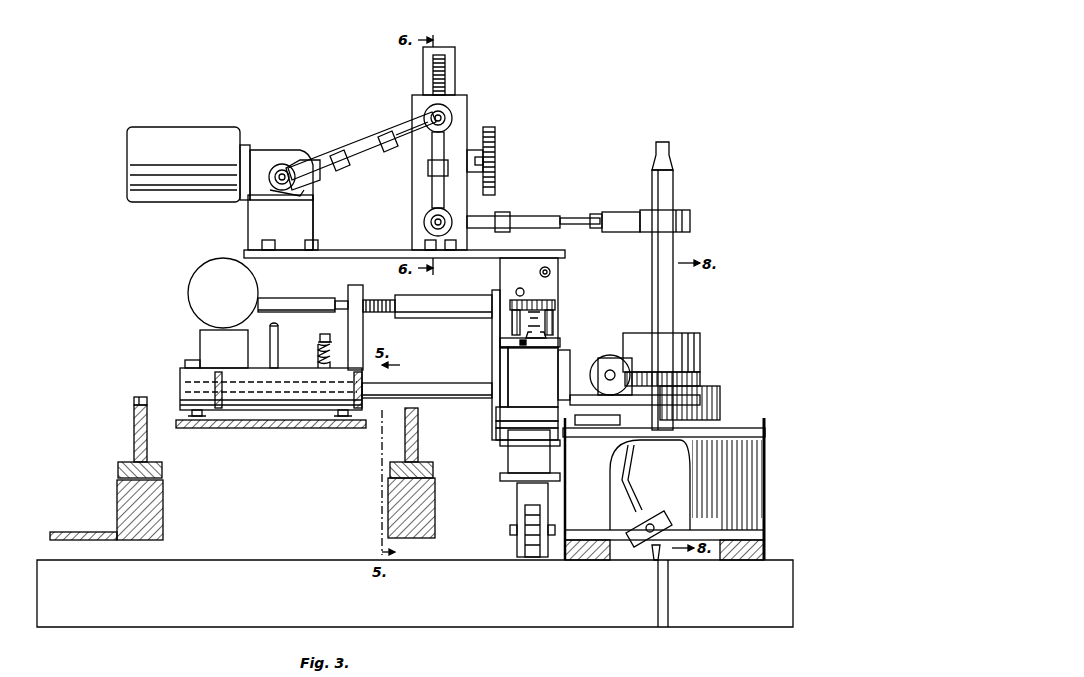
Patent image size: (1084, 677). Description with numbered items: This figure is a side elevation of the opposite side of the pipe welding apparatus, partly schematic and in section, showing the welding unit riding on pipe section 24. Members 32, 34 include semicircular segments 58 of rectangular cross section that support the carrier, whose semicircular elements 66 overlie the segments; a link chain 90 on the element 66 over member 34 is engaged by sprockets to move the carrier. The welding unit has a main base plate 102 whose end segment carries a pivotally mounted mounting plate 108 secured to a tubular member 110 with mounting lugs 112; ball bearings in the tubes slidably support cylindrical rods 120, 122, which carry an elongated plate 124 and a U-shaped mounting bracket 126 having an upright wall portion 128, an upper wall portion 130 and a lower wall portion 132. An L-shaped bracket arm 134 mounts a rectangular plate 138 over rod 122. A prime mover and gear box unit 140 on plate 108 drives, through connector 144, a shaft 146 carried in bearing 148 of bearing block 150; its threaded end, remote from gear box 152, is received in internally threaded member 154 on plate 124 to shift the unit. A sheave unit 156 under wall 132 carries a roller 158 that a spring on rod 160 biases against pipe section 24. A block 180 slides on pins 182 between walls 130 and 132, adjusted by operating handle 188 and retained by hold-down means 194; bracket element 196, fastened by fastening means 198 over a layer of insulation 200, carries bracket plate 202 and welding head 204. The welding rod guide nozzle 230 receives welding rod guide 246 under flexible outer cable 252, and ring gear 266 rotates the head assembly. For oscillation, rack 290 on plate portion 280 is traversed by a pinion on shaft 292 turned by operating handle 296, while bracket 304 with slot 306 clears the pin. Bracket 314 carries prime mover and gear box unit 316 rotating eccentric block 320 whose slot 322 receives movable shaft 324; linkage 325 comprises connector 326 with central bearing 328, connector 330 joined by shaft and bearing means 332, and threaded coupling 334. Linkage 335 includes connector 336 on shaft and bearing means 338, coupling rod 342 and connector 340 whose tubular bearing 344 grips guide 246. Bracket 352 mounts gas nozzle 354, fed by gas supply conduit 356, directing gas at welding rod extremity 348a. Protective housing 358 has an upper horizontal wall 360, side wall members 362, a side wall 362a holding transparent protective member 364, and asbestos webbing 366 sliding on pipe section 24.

The pipe section 24 is at (242, 560).
The member 32 is at (420, 540).
The member 34 is at (142, 545).
The semicircular segment 58 is at (150, 503).
The semicircular element 66 is at (130, 431).
The link chain 90 is at (138, 397).
The main base plate 102 is at (262, 428).
The mounting plate 108 is at (262, 384).
The tubular member 110 is at (298, 428).
The mounting lug 112 is at (222, 382).
The cylindrical rod 120 is at (437, 383).
The cylindrical rod 122 is at (270, 345).
The elongated plate 124 is at (496, 425).
The mounting bracket 126 is at (498, 450).
The upright wall portion 128 is at (496, 412).
The upper wall portion 130 is at (566, 350).
The lower wall portion 132 is at (515, 481).
The bracket arm 134 is at (508, 262).
The rectangular plate 138 is at (340, 252).
The prime mover and gear box unit 140 is at (188, 293).
The connector 144 is at (288, 292).
The shaft 146 is at (340, 300).
The bearing 148 is at (370, 287).
The bearing block 150 is at (360, 330).
The gear box 152 is at (200, 337).
The internally threaded member 154 is at (492, 320).
The sheave unit 156 is at (548, 493).
The roller 158 is at (540, 519).
The rod 160 is at (200, 416).
The block 180 is at (500, 370).
The pin 182 is at (545, 455).
The operating handle 188 is at (548, 300).
The hold-down means 194 is at (500, 343).
The bracket element 196 is at (594, 368).
The fastening means 198 is at (620, 358).
The layer of insulation 200 is at (533, 377).
The bracket plate 202 is at (720, 395).
The welding head 204 is at (700, 335).
The welding rod guide nozzle 230 is at (675, 474).
The welding rod guide 246 is at (676, 250).
The flexible outer cable 252 is at (670, 145).
The ring gear 266 is at (700, 375).
The rectangular plate portion 280 is at (455, 70).
The rack 290 is at (447, 60).
The shaft 292 is at (484, 163).
The operating handle 296 is at (482, 154).
The bracket 304 is at (446, 140).
The slot 306 is at (494, 138).
The bracket 314 is at (313, 240).
The prime mover and gear box unit 316 is at (236, 125).
The eccentric block 320 is at (292, 158).
The longitudinal slot 322 is at (280, 150).
The movable shaft 324 is at (298, 197).
The linkage 325 is at (380, 138).
The connector 326 is at (330, 172).
The central bearing 328 is at (290, 212).
The connector 330 is at (404, 132).
The shaft and bearing means 332 is at (452, 112).
The threaded coupling 334 is at (350, 160).
The linkage 335 is at (598, 214).
The connector 336 is at (490, 217).
The shaft and bearing means 338 is at (424, 222).
The connector 340 is at (620, 212).
The coupling rod 342 is at (560, 218).
The tubular bearing 344 is at (690, 213).
The lower extremity of welding rod 348a is at (670, 562).
The bracket 352 is at (665, 520).
The gas nozzle 354 is at (652, 552).
The gas supply conduit 356 is at (627, 458).
The protective housing 358 is at (752, 452).
The upper horizontal wall 360 is at (730, 430).
The side wall member 362 is at (740, 474).
The side wall 362a is at (745, 500).
The transparent protective member 364 is at (764, 532).
The asbestos webbing 366 is at (750, 547).